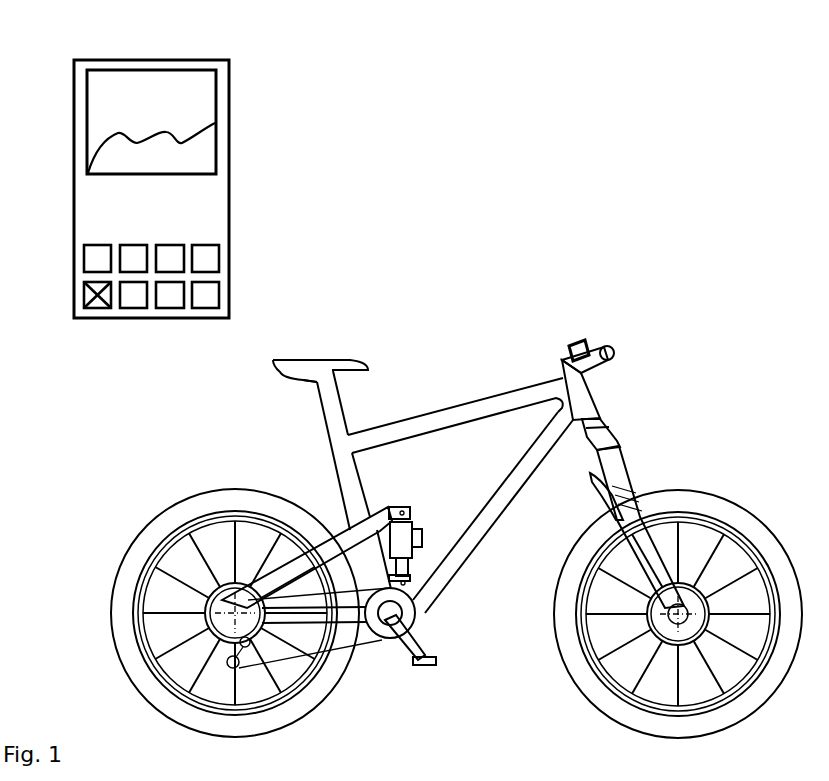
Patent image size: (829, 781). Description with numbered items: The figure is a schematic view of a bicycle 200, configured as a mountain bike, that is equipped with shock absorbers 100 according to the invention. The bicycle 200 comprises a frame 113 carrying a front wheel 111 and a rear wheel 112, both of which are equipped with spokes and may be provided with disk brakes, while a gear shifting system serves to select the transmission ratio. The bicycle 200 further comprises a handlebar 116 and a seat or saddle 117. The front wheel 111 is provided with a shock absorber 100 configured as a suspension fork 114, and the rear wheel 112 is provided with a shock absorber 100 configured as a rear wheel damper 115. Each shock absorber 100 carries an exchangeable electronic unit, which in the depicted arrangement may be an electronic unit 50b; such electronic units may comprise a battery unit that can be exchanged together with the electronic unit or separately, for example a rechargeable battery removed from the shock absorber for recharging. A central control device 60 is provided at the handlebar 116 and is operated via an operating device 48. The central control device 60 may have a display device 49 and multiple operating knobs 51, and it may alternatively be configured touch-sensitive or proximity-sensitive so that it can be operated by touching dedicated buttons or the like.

The operating device 48 is at (238, 97).
The display device 49 is at (129, 86).
The operating knobs 51 is at (205, 306).
The central control device 60 is at (64, 106).
The shock absorber 100 is at (420, 550).
The electronic unit 50b is at (424, 536).
The front wheel 111 is at (747, 497).
The rear wheel 112 is at (110, 571).
The frame 113 is at (486, 415).
The suspension fork 114 is at (642, 518).
The rear wheel damper 115 is at (412, 526).
The handlebar 116 is at (610, 343).
The saddle 117 is at (345, 354).
The bicycle 200 is at (411, 401).